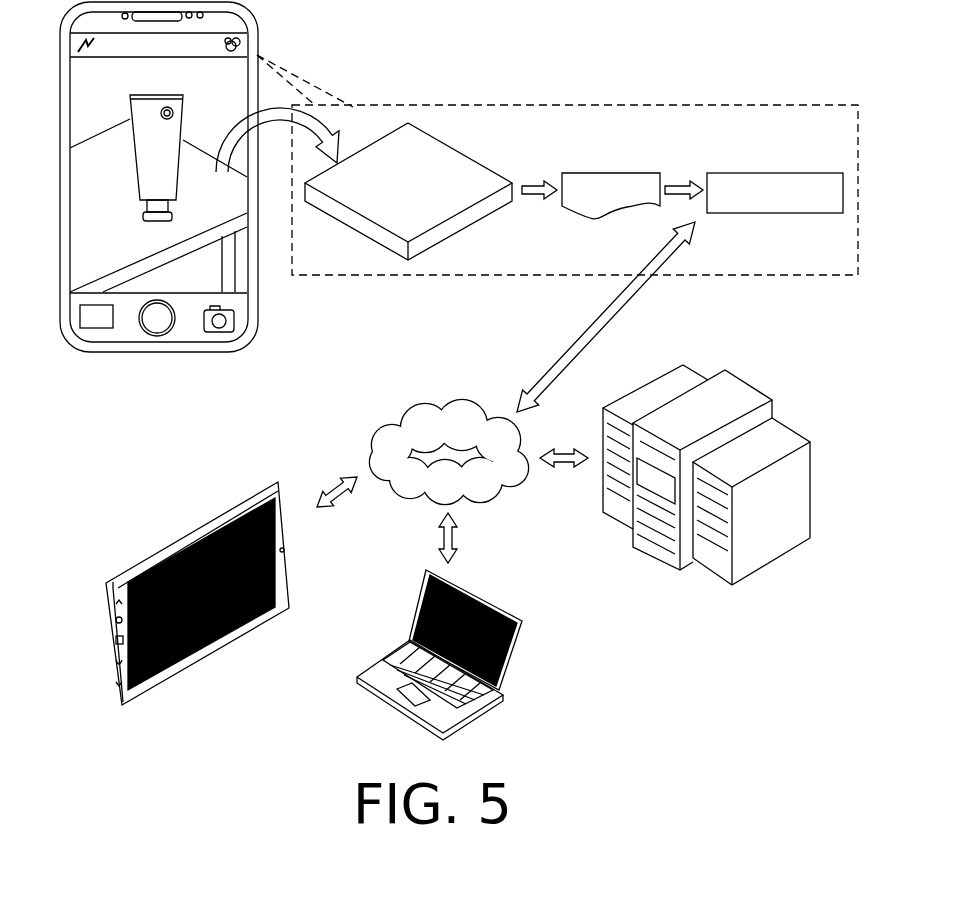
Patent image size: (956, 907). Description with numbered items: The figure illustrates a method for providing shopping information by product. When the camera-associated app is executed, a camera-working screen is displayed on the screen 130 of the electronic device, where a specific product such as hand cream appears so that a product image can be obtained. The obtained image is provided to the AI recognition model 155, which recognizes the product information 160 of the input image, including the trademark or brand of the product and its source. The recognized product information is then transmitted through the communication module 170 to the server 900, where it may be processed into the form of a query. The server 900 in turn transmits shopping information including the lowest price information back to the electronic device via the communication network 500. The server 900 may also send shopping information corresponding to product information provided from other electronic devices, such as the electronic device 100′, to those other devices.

The screen 130 is at (98, 86).
The AI recognition model 155 is at (448, 135).
The product information 160 is at (622, 170).
The communication module 170 is at (807, 170).
The communication network 500 is at (406, 405).
The server 900 is at (704, 364).
The electronic device 100′ is at (206, 517).